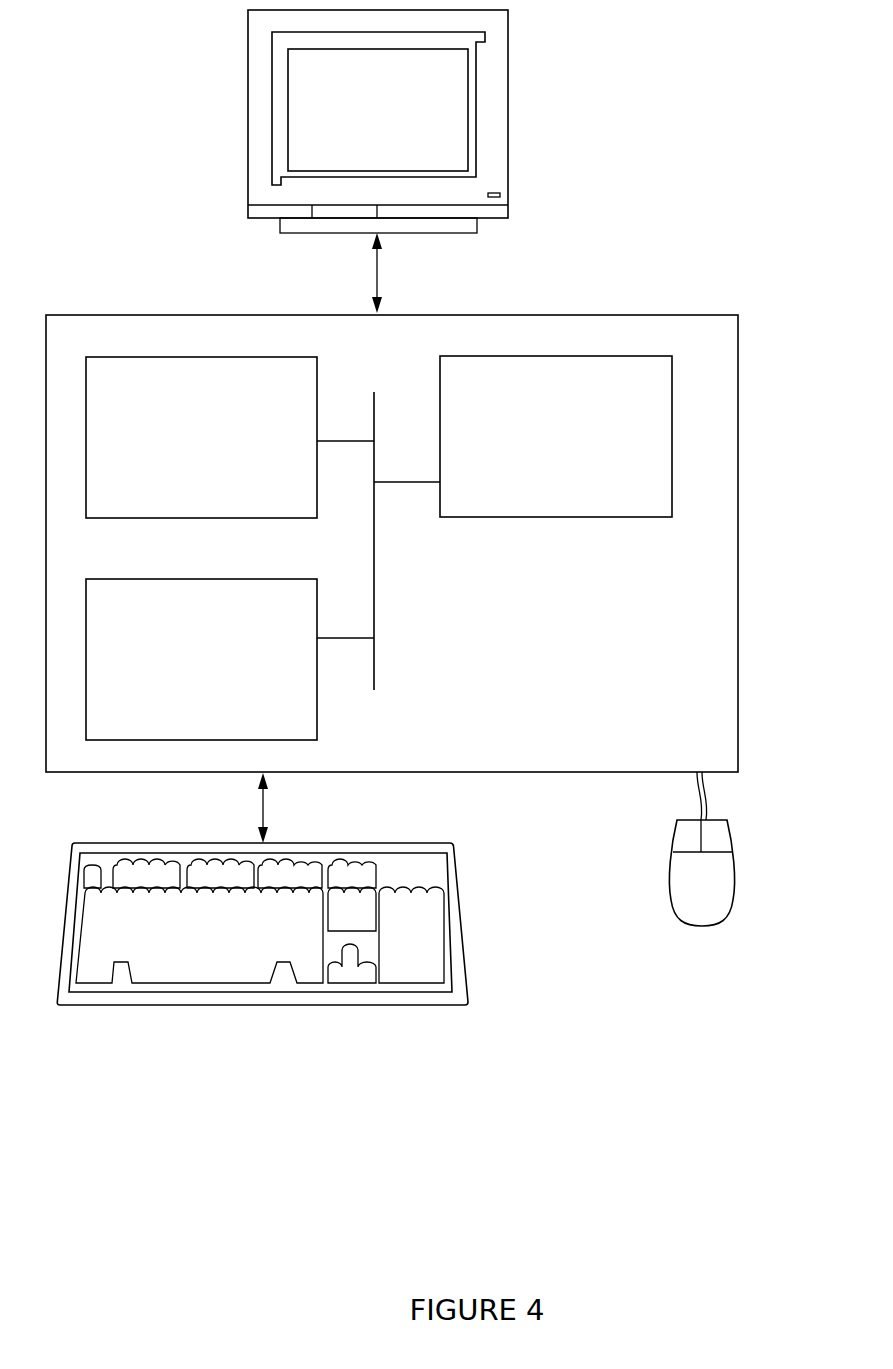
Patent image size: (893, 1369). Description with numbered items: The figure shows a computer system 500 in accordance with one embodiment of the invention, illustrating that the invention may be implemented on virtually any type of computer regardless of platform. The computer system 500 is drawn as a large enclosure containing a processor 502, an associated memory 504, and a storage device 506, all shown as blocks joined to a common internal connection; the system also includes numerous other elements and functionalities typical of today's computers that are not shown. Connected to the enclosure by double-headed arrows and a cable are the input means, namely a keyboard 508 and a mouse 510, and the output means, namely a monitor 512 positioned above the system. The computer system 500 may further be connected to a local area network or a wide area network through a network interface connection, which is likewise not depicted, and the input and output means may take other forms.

The computer system 500 is at (716, 179).
The processor 502 is at (552, 447).
The memory 504 is at (181, 447).
The storage device 506 is at (178, 672).
The keyboard 508 is at (173, 964).
The mouse 510 is at (680, 896).
The monitor 512 is at (356, 124).